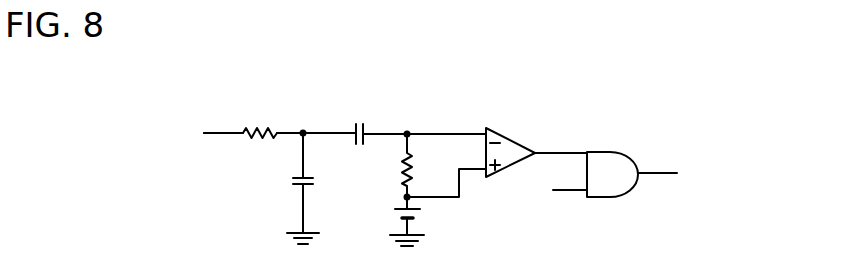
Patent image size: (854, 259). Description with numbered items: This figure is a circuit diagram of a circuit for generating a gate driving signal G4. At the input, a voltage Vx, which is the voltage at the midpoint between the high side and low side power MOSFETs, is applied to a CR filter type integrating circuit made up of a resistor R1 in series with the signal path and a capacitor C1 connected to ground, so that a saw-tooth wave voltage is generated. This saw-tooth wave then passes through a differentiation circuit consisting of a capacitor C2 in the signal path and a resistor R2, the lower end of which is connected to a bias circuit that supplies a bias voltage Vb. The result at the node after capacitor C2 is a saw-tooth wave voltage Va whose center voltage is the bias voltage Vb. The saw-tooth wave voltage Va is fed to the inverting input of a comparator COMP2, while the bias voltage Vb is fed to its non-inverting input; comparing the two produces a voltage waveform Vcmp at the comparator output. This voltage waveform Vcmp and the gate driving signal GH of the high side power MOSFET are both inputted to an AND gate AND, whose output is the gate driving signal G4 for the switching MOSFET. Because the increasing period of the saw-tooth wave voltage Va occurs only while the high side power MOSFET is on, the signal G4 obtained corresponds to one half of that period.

The voltage Vx is at (205, 133).
The resistor R1 is at (273, 127).
The capacitor C1 is at (292, 187).
The capacitor C2 is at (370, 127).
The saw-tooth wave voltage Va is at (411, 133).
The resistor R2 is at (400, 182).
The bias voltage Vb is at (396, 209).
The comparator COMP2 is at (511, 114).
The voltage waveform Vcmp is at (563, 140).
The AND gate AND is at (603, 152).
The gate driving signal GH is at (553, 190).
The gate driving signal G4 is at (669, 172).